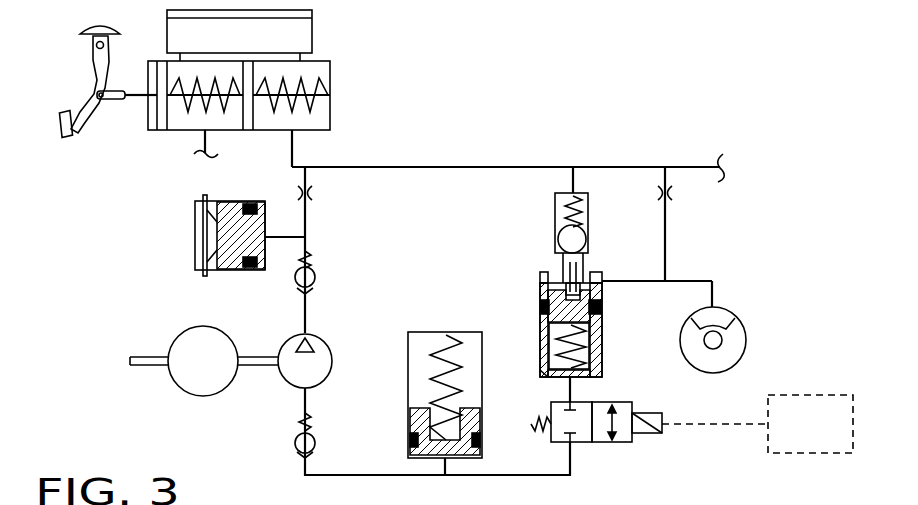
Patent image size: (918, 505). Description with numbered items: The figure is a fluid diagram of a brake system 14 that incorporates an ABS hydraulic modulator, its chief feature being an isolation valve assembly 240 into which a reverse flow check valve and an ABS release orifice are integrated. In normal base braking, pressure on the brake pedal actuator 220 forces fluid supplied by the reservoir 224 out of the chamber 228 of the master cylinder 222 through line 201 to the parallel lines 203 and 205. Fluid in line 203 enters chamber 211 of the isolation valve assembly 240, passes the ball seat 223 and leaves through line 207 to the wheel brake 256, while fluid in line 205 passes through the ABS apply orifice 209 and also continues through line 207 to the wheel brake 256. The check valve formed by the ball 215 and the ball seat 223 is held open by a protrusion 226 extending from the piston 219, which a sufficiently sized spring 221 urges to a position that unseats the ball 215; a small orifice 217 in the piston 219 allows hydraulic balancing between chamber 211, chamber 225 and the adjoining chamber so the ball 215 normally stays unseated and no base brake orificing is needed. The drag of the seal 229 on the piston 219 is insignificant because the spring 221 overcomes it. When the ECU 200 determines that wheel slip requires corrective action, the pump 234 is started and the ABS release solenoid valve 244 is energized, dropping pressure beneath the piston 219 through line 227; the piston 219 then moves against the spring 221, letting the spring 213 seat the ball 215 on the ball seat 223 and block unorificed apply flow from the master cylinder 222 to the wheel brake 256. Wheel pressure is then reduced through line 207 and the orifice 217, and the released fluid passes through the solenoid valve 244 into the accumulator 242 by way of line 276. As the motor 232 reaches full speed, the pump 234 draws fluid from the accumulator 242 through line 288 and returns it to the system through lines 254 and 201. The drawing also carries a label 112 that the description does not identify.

The brake system 14 is at (577, 134).
The pin 112 is at (592, 278).
The ECU 200 is at (822, 395).
The line 201 is at (460, 162).
The line 203 is at (557, 274).
The line 205 is at (667, 247).
The line 207 is at (689, 281).
The ABS apply orifice 209 is at (670, 195).
The chamber 211 is at (556, 206).
The spring 213 is at (565, 225).
The ball 215 is at (575, 240).
The orifice 217 is at (597, 311).
The piston 219 is at (598, 342).
The brake pedal actuator 220 is at (72, 138).
The spring 221 is at (600, 372).
The master cylinder 222 is at (331, 78).
The ball seat 223 is at (556, 250).
The reservoir 224 is at (303, 42).
The chamber 225 is at (542, 374).
The protrusion 226 is at (572, 272).
The line 227 is at (575, 392).
The chamber 228 is at (322, 122).
The seal 229 is at (540, 312).
The motor 232 is at (197, 326).
The pump 234 is at (320, 348).
The isolation valve assembly 240 is at (539, 297).
The accumulator 242 is at (408, 388).
The ABS release solenoid valve 244 is at (600, 443).
The line 254 is at (310, 177).
The wheel brake 256 is at (716, 312).
The line 276 is at (445, 470).
The line 288 is at (301, 400).